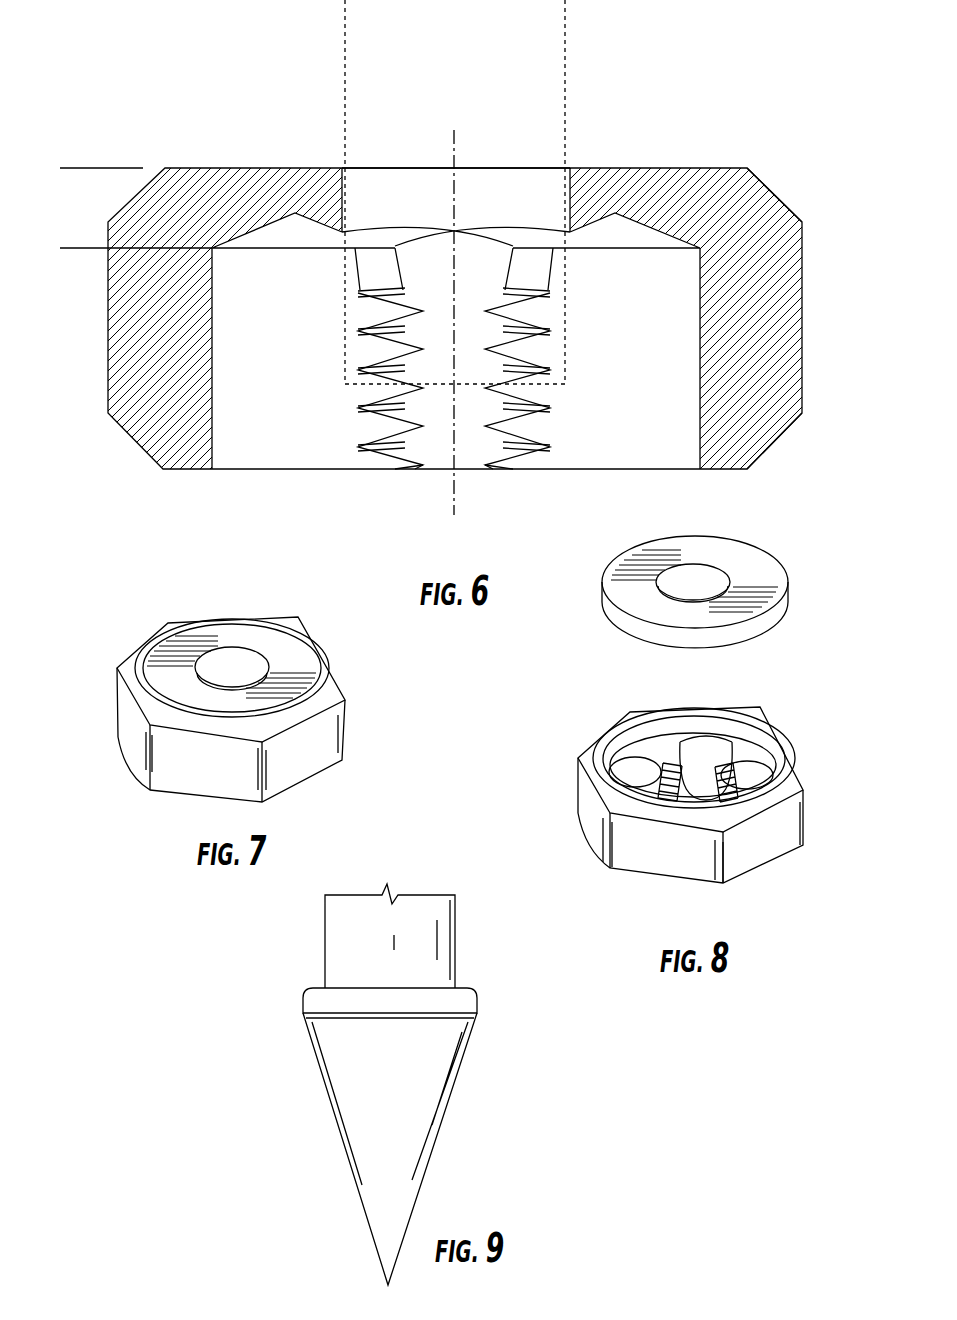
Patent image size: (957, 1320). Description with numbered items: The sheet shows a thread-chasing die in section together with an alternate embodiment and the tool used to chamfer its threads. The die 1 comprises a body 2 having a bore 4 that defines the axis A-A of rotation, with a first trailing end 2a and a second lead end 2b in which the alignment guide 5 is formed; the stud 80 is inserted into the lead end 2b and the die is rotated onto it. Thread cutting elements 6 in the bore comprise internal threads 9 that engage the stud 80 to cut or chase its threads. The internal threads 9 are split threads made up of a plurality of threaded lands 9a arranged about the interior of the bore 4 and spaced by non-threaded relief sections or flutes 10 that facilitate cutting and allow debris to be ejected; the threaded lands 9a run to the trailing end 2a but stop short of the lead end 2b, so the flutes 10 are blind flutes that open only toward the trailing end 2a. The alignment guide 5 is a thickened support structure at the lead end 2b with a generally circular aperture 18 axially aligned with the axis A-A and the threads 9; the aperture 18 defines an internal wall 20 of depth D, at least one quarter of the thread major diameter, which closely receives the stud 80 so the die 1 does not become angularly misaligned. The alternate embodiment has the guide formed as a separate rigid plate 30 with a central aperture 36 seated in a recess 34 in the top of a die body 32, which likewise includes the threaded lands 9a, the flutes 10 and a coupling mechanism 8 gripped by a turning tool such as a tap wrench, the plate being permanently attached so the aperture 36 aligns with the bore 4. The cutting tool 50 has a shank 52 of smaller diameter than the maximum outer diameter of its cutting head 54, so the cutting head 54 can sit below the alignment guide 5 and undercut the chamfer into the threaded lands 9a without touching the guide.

In FIG. 6, the die 1 is at (826, 178).
In FIG. 6, the body 2 is at (808, 303).
In FIG. 6, the first trailing end 2a is at (724, 472).
In FIG. 6, the second lead end 2b is at (697, 164).
In FIG. 6, the bore 4 is at (440, 318).
In FIG. 8, the bore 4 is at (706, 763).
In FIG. 6, the alignment guide 5 is at (598, 182).
In FIG. 6, the thread cutting elements 6 is at (400, 480).
In FIG. 7, the coupling mechanism 8 is at (165, 783).
In FIG. 8, the coupling mechanism 8 is at (802, 818).
In FIG. 6, the internal threads 9 is at (372, 428).
In FIG. 6, the threaded lands 9a is at (385, 456).
In FIG. 8, the threaded lands 9a is at (668, 768).
In FIG. 6, the flutes 10 is at (213, 358).
In FIG. 8, the flutes 10 is at (640, 765).
In FIG. 6, the aperture 18 is at (380, 165).
In FIG. 6, the internal wall 20 is at (342, 200).
In FIG. 7, the alignment guide 30 is at (283, 640).
In FIG. 8, the alignment guide 30 is at (762, 632).
In FIG. 7, the body 32 is at (343, 757).
In FIG. 8, the body 32 is at (772, 874).
In FIG. 8, the recess 34 is at (782, 744).
In FIG. 8, the aperture 36 is at (690, 588).
In FIG. 9, the cutting tool 50 is at (485, 986).
In FIG. 9, the shank 52 is at (443, 930).
In FIG. 9, the cutting head 54 is at (418, 1135).
In FIG. 6, the stud 80 is at (567, 42).
In FIG. 6, the axis A- A is at (454, 322).
In FIG. 6, the depth D is at (83, 170).